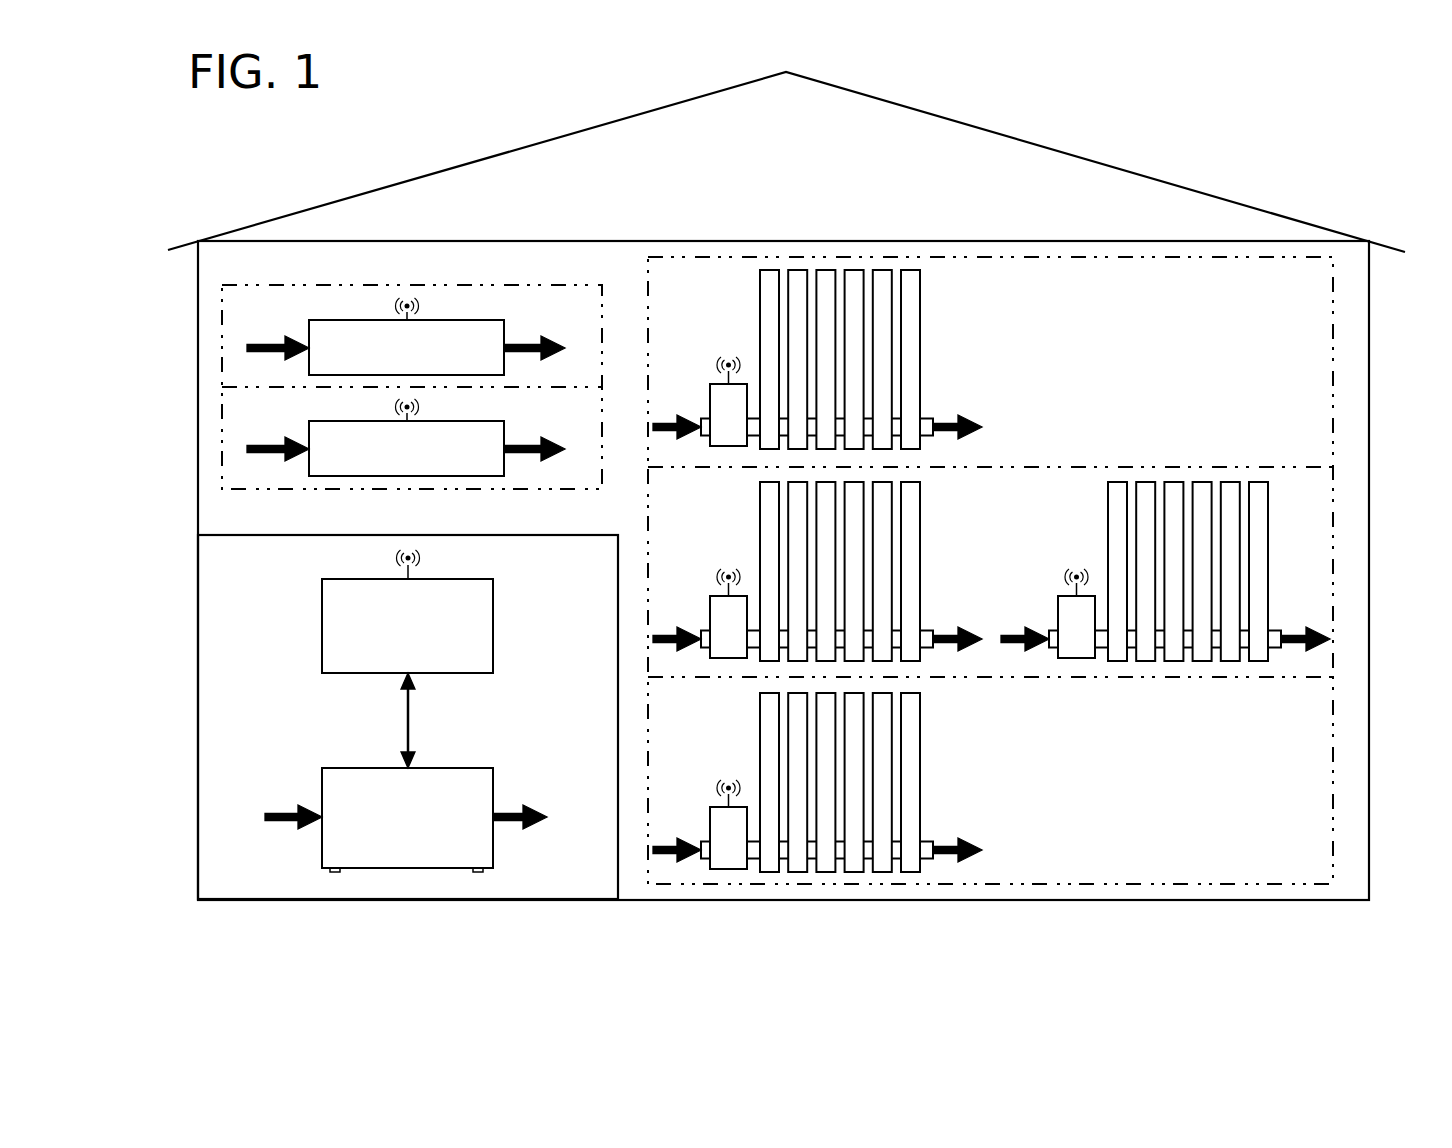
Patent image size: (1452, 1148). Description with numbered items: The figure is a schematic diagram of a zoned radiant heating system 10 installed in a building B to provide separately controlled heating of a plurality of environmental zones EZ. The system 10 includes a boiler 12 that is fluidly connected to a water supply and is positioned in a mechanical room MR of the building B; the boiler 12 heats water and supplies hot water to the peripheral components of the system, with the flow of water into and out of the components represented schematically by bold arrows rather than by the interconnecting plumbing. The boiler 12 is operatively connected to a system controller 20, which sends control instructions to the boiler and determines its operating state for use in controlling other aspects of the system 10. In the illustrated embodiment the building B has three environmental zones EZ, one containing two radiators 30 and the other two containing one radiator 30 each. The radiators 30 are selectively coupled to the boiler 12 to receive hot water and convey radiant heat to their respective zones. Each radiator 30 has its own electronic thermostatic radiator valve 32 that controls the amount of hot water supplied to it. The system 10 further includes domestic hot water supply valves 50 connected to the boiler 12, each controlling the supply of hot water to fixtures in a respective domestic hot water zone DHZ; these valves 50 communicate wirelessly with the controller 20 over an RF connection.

The building B is at (1043, 145).
The radiant heating system 10 is at (252, 874).
The mechanical room MR is at (257, 589).
The boiler 12 is at (493, 787).
The controller 20 is at (493, 626).
The radiator 30 is at (920, 330).
The thermostatic radiator valve 32 is at (710, 410).
The domestic hot water supply valve 50 is at (459, 320).
The domestic hot water zone DHZ is at (222, 318).
The environmental zone EZ is at (1334, 350).